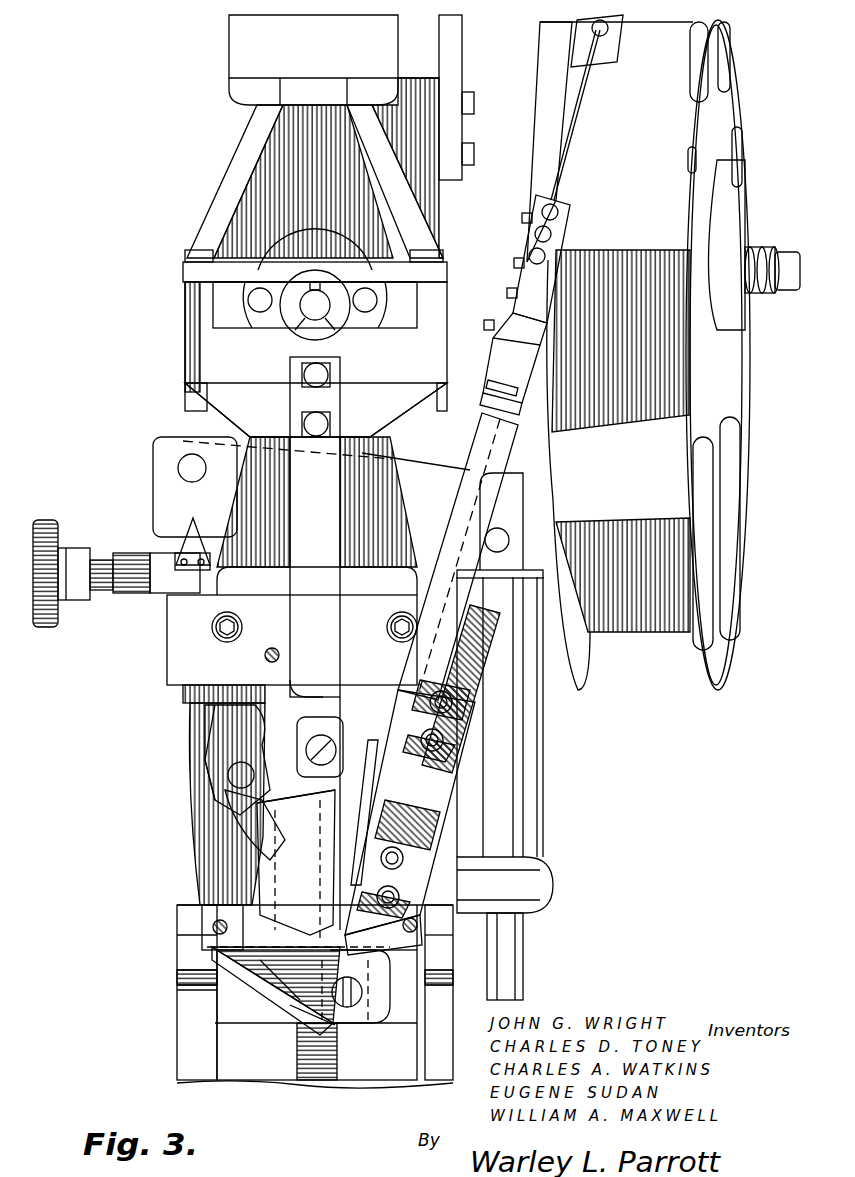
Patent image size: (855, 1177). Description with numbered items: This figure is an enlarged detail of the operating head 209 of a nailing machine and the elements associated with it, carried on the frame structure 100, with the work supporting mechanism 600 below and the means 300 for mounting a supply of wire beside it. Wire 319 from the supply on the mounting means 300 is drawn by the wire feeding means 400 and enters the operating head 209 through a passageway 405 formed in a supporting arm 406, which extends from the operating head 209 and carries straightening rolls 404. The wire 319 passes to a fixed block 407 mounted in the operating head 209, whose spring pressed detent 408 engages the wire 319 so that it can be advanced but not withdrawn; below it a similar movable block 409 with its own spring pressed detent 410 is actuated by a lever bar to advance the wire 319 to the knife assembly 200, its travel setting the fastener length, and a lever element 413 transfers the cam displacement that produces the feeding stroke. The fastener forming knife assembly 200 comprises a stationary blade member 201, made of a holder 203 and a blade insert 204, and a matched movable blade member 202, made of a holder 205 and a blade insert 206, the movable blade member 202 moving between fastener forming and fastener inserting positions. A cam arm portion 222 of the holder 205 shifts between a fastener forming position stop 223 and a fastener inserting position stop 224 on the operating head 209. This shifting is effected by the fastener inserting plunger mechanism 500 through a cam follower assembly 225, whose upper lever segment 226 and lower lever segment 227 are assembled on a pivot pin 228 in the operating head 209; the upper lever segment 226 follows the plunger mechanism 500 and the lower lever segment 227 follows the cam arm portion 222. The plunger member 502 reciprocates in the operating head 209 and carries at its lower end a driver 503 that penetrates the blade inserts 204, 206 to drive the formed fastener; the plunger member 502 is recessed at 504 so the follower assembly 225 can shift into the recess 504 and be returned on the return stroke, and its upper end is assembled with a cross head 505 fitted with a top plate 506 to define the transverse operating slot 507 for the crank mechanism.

The frame structure 100 is at (175, 1040).
The fastener forming knife assembly 200 is at (348, 1008).
The stationary blade member 201 is at (392, 952).
The movable blade member 202 is at (260, 958).
The holder 203 is at (396, 1020).
The blade insert 204 is at (352, 1010).
The holder 205 is at (292, 975).
The blade insert 206 is at (302, 1005).
The operating head 209 is at (200, 845).
The cam arm portion 222 is at (315, 895).
The fastener forming position stop 223 is at (296, 802).
The fastener inserting position stop 224 is at (232, 930).
The cam follower assembly 225 is at (205, 765).
The upper lever segment 226 is at (205, 742).
The lower lever segment 227 is at (230, 812).
The pivot pin 228 is at (228, 777).
The means for mounting a supply of wire 300 is at (748, 420).
The wire 319 is at (580, 122).
The means for feeding wire 400 is at (486, 702).
The straightening rolls 404 is at (520, 272).
The passageway 405 is at (485, 452).
The supporting arm 406 is at (455, 525).
The fixed block 407 is at (402, 722).
The spring pressed detent 408 is at (426, 757).
The movable block 409 is at (410, 840).
The spring pressed detent 410 is at (393, 909).
The lever element 413 is at (178, 442).
The fastener inserting plunger mechanism 500 is at (185, 345).
The plunger member 502 is at (335, 661).
The driver 503 is at (372, 795).
The recess 504 is at (327, 690).
The cross head 505 is at (185, 385).
The top plate 506 is at (185, 263).
The transverse operating slot 507 is at (213, 313).
The work supporting mechanism 600 is at (532, 970).